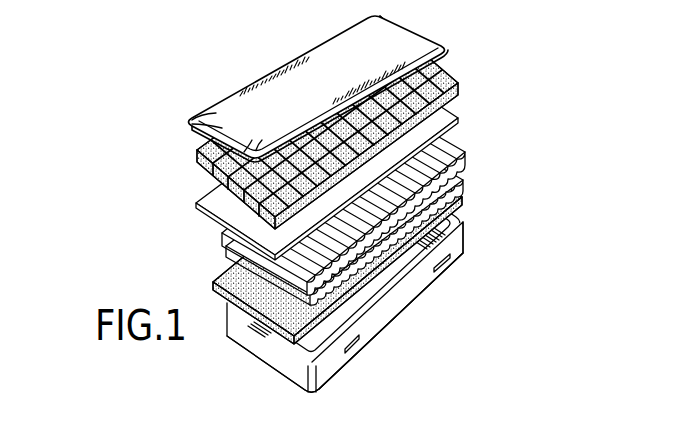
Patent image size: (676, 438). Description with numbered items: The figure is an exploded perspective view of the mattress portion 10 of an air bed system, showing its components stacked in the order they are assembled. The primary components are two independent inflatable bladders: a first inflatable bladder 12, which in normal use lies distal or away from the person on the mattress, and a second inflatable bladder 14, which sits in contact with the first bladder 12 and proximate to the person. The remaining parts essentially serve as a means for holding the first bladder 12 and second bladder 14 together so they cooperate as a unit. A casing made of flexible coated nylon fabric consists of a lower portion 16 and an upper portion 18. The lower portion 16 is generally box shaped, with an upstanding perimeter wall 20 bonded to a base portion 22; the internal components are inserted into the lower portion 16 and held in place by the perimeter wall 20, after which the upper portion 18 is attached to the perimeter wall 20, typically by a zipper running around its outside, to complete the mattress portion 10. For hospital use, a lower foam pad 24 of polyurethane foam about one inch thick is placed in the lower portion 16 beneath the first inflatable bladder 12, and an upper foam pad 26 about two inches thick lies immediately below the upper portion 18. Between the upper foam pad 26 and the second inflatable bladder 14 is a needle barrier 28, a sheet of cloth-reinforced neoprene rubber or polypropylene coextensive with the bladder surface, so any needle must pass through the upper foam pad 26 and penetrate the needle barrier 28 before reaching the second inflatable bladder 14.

The mattress portion 10 is at (98, 253).
The first inflatable bladder 12 is at (466, 180).
The second inflatable bladder 14 is at (460, 142).
The lower portion 16 is at (390, 279).
The upper portion 18 is at (441, 43).
The perimeter wall 20 is at (395, 308).
The base portion 22 is at (377, 291).
The lower foam pad 24 is at (460, 192).
The upper foam pad 26 is at (450, 75).
The needle barrier 28 is at (455, 116).